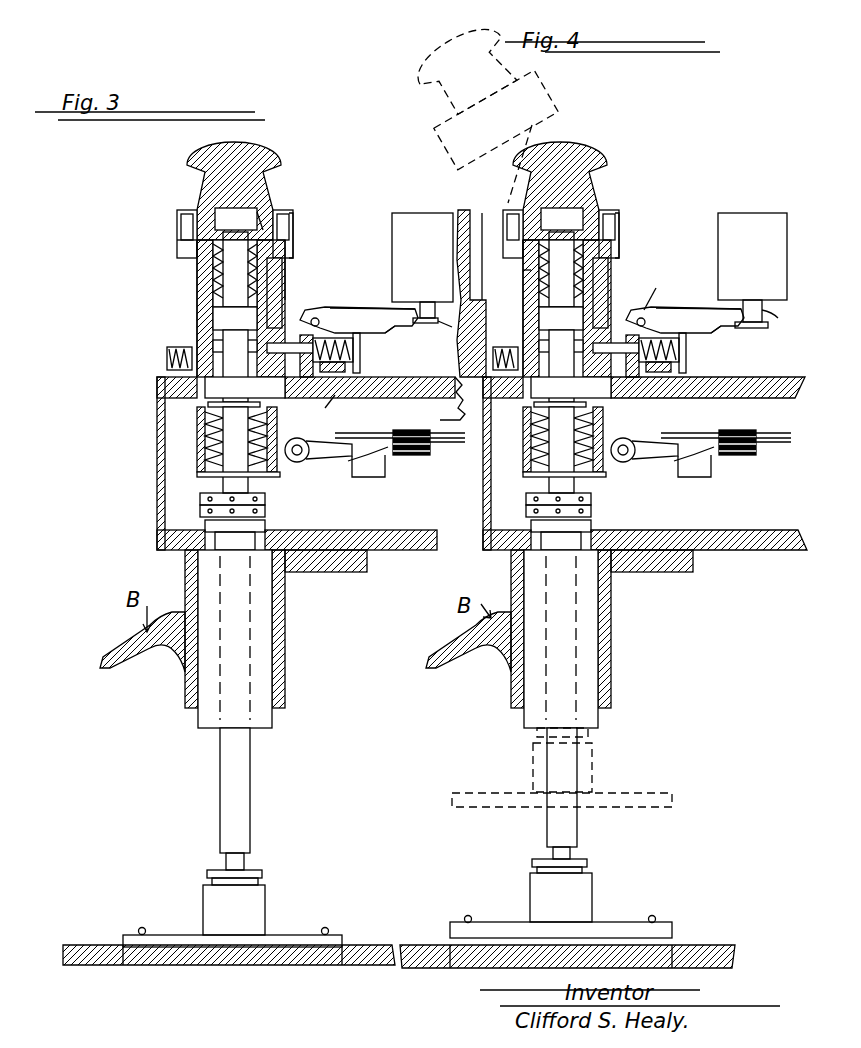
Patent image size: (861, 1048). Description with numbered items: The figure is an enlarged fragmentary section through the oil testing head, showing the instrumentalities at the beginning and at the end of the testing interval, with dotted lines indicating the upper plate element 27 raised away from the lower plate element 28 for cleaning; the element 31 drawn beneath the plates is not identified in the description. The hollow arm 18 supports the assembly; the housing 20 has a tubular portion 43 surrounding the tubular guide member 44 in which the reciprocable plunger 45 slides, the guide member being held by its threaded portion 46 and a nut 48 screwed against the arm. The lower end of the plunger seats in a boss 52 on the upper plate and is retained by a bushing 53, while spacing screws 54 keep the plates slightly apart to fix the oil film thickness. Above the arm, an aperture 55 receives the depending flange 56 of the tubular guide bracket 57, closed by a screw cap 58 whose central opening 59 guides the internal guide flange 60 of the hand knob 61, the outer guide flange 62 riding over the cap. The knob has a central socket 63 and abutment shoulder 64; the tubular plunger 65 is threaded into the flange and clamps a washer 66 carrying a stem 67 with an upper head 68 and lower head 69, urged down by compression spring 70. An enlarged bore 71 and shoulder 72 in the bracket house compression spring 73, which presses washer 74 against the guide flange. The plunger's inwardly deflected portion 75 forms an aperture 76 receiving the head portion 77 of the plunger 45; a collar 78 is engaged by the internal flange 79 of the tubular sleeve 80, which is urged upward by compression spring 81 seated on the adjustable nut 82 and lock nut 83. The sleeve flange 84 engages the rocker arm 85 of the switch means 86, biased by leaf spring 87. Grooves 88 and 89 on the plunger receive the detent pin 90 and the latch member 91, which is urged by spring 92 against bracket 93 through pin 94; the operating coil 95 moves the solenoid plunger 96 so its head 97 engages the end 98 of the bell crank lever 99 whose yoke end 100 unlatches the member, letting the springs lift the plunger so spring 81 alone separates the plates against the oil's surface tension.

In FIG. 3, the arm 18 is at (350, 545).
In FIG. 4, the arm 18 is at (632, 380).
In FIG. 3, the housing 20 is at (345, 572).
In FIG. 4, the housing 20 is at (652, 580).
In FIG. 3, the upper plate element 27 is at (278, 935).
In FIG. 4, the upper plate element 27 is at (562, 847).
In FIG. 3, the lower plate element 28 is at (280, 965).
In FIG. 4, the lower plate element 28 is at (567, 938).
In FIG. 3, the base plate 31 is at (372, 947).
In FIG. 4, the base plate 31 is at (604, 936).
In FIG. 3, the tubular portion 43 is at (285, 608).
In FIG. 4, the tubular portion 43 is at (577, 629).
In FIG. 3, the tubular guide member 44 is at (272, 724).
In FIG. 4, the tubular guide member 44 is at (586, 639).
In FIG. 3, the reciprocable plunger 45 is at (250, 787).
In FIG. 4, the reciprocable plunger 45 is at (583, 787).
In FIG. 3, the threaded portion 46 is at (207, 526).
In FIG. 4, the threaded portion 46 is at (533, 543).
In FIG. 3, the nut 48 is at (195, 552).
In FIG. 3, the boss 52 is at (262, 900).
In FIG. 4, the boss 52 is at (579, 890).
In FIG. 3, the bushing 53 is at (262, 874).
In FIG. 4, the bushing 53 is at (580, 848).
In FIG. 3, the spacing screws 54 is at (328, 928).
In FIG. 4, the spacing screws 54 is at (560, 902).
In FIG. 3, the aperture 55 is at (205, 395).
In FIG. 3, the depending flange 56 is at (165, 385).
In FIG. 4, the depending flange 56 is at (571, 387).
In FIG. 3, the tubular guide bracket 57 is at (168, 355).
In FIG. 4, the tubular guide bracket 57 is at (504, 339).
In FIG. 3, the screw cap 58 is at (197, 285).
In FIG. 4, the screw cap 58 is at (589, 302).
In FIG. 3, the central opening 59 is at (180, 242).
In FIG. 3, the internal guide flange 60 is at (181, 232).
In FIG. 4, the internal guide flange 60 is at (513, 227).
In FIG. 3, the hand knob 61 is at (192, 158).
In FIG. 4, the hand knob 61 is at (498, 125).
In FIG. 3, the outer guide flange 62 is at (177, 215).
In FIG. 4, the outer guide flange 62 is at (519, 189).
In FIG. 3, the central socket 63 is at (260, 214).
In FIG. 3, the abutment shoulder 64 is at (283, 230).
In FIG. 4, the abutment shoulder 64 is at (600, 293).
In FIG. 3, the tubular plunger 65 is at (292, 256).
In FIG. 4, the tubular plunger 65 is at (601, 183).
In FIG. 3, the washer 66 is at (290, 215).
In FIG. 4, the washer 66 is at (609, 227).
In FIG. 3, the stem 67 is at (200, 270).
In FIG. 4, the stem 67 is at (589, 308).
In FIG. 3, the head 68 is at (250, 205).
In FIG. 4, the head 68 is at (578, 202).
In FIG. 3, the head 69 is at (258, 315).
In FIG. 4, the head 69 is at (592, 309).
In FIG. 3, the compression spring 70 is at (215, 296).
In FIG. 4, the compression spring 70 is at (532, 274).
In FIG. 3, the bore of increased diameter 71 is at (213, 318).
In FIG. 4, the bore of increased diameter 71 is at (561, 269).
In FIG. 3, the abutment shoulder 72 is at (200, 340).
In FIG. 4, the abutment shoulder 72 is at (561, 346).
In FIG. 3, the compression spring 73 is at (275, 285).
In FIG. 4, the compression spring 73 is at (610, 308).
In FIG. 3, the washer 74 is at (286, 252).
In FIG. 4, the washer 74 is at (503, 273).
In FIG. 3, the inwardly deflected portion 75 is at (278, 406).
In FIG. 4, the inwardly deflected portion 75 is at (574, 435).
In FIG. 3, the aperture 76 is at (223, 420).
In FIG. 4, the aperture 76 is at (561, 450).
In FIG. 3, the head portion 77 is at (237, 366).
In FIG. 4, the head portion 77 is at (562, 366).
In FIG. 3, the collar 78 is at (208, 406).
In FIG. 4, the collar 78 is at (560, 387).
In FIG. 3, the internal flange 79 is at (280, 424).
In FIG. 4, the internal flange 79 is at (655, 450).
In FIG. 3, the tubular sleeve 80 is at (206, 450).
In FIG. 4, the tubular sleeve 80 is at (539, 439).
In FIG. 3, the compression spring 81 is at (200, 477).
In FIG. 4, the compression spring 81 is at (546, 487).
In FIG. 3, the adjustable nut 82 is at (266, 498).
In FIG. 4, the adjustable nut 82 is at (586, 497).
In FIG. 3, the lock nut 83 is at (266, 514).
In FIG. 4, the lock nut 83 is at (586, 519).
In FIG. 3, the flange 84 is at (285, 470).
In FIG. 4, the flange 84 is at (694, 466).
In FIG. 3, the rocker arm 85 is at (335, 458).
In FIG. 4, the rocker arm 85 is at (647, 430).
In FIG. 3, the switch means 86 is at (372, 437).
In FIG. 4, the switch means 86 is at (726, 427).
In FIG. 3, the leaf spring 87 is at (390, 462).
In FIG. 4, the leaf spring 87 is at (704, 470).
In FIG. 3, the groove 88 is at (328, 309).
In FIG. 4, the groove 88 is at (685, 320).
In FIG. 3, the groove 89 is at (292, 358).
In FIG. 4, the groove 89 is at (616, 356).
In FIG. 3, the detent pin 90 is at (170, 368).
In FIG. 4, the detent pin 90 is at (504, 346).
In FIG. 3, the latch member 91 is at (355, 350).
In FIG. 4, the latch member 91 is at (677, 345).
In FIG. 3, the compression spring 92 is at (346, 367).
In FIG. 4, the compression spring 92 is at (680, 363).
In FIG. 3, the supporting bracket 93 is at (398, 327).
In FIG. 4, the supporting bracket 93 is at (699, 316).
In FIG. 3, the pin 94 is at (358, 334).
In FIG. 4, the pin 94 is at (654, 360).
In FIG. 3, the operating coil 95 is at (422, 257).
In FIG. 4, the operating coil 95 is at (752, 256).
In FIG. 3, the solenoid plunger 96 is at (451, 313).
In FIG. 4, the solenoid plunger 96 is at (784, 318).
In FIG. 3, the head 97 is at (426, 324).
In FIG. 4, the head 97 is at (759, 342).
In FIG. 3, the end 98 is at (424, 310).
In FIG. 4, the end 98 is at (748, 298).
In FIG. 3, the bell crank lever 99 is at (390, 310).
In FIG. 4, the bell crank lever 99 is at (696, 303).
In FIG. 3, the yoke end 100 is at (330, 409).
In FIG. 4, the yoke end 100 is at (665, 288).